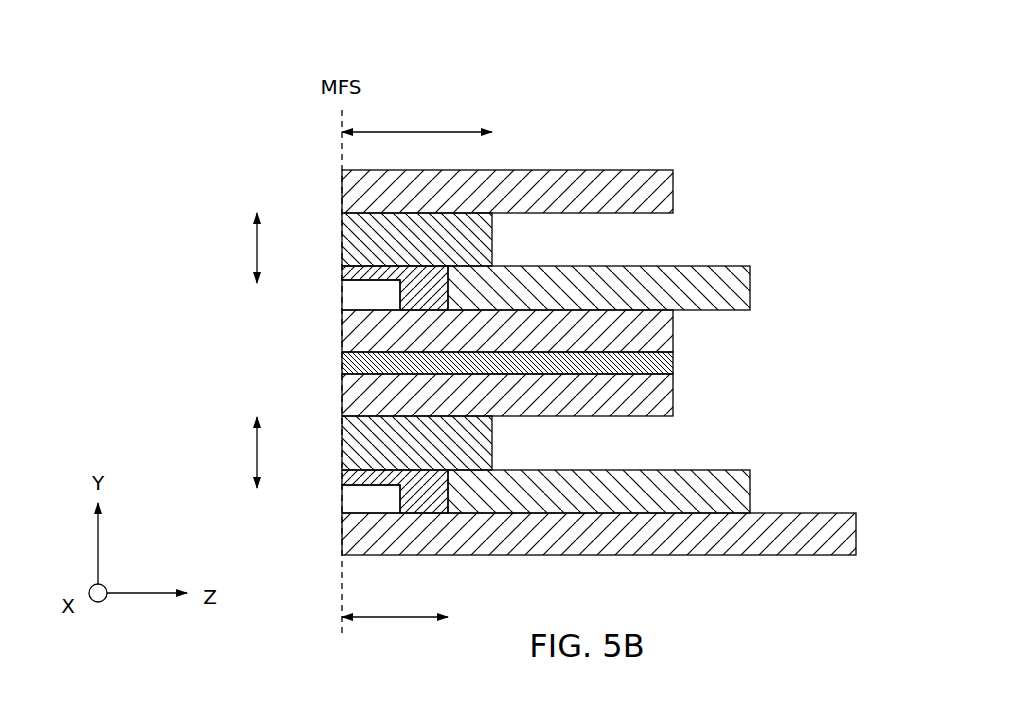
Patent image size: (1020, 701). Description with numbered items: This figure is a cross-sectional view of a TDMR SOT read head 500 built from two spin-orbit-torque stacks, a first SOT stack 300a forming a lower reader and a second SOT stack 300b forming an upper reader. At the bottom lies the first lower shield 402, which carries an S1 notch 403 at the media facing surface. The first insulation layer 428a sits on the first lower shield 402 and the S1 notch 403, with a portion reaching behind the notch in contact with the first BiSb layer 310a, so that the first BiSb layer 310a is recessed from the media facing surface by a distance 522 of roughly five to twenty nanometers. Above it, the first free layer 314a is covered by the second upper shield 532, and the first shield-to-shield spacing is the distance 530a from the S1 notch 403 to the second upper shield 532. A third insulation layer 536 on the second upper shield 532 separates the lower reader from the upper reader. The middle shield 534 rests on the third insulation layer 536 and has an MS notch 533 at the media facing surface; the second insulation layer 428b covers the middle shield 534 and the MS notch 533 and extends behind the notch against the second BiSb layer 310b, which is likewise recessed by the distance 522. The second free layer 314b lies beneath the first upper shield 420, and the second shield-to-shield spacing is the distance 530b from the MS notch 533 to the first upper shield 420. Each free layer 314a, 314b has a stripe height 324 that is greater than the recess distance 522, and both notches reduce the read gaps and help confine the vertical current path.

The TDMR SOT read head 500 is at (603, 78).
The stripe height 324 is at (400, 130).
The first upper shield 420 is at (483, 201).
The second free layer 314b is at (440, 252).
The second SOT stack 300b is at (710, 243).
The second BiSb layer 310b is at (555, 300).
The MS notch 533 is at (392, 315).
The second insulation layer 428b is at (346, 272).
The second shield-to-shield spacing distance 530b is at (253, 248).
The middle shield 534 is at (480, 340).
The third insulation layer 536 is at (673, 360).
The second upper shield 532 is at (480, 405).
The first shield-to-shield spacing distance 530a is at (253, 453).
The first free layer 314a is at (440, 456).
The first SOT stack 300a is at (710, 455).
The first insulation layer 428a is at (346, 477).
The S1 notch 403 is at (392, 519).
The first BiSb layer 310a is at (555, 504).
The first lower shield 402 is at (555, 542).
The recess distance 522 is at (395, 612).